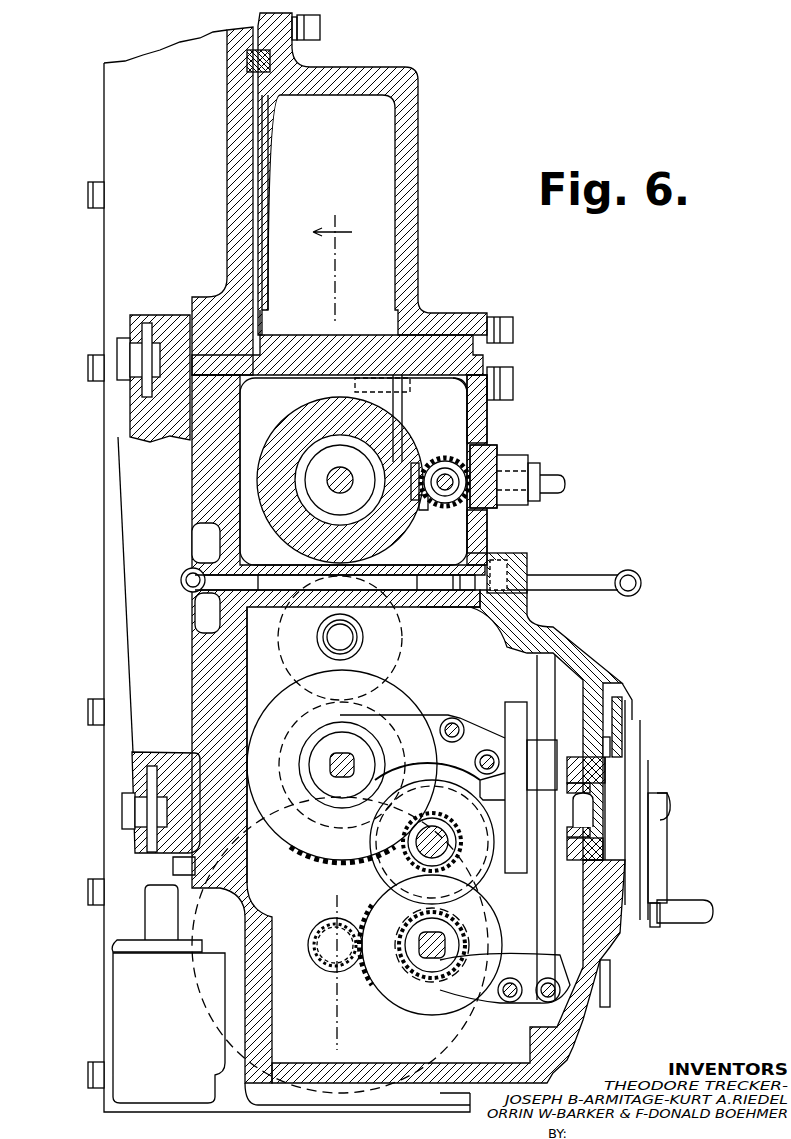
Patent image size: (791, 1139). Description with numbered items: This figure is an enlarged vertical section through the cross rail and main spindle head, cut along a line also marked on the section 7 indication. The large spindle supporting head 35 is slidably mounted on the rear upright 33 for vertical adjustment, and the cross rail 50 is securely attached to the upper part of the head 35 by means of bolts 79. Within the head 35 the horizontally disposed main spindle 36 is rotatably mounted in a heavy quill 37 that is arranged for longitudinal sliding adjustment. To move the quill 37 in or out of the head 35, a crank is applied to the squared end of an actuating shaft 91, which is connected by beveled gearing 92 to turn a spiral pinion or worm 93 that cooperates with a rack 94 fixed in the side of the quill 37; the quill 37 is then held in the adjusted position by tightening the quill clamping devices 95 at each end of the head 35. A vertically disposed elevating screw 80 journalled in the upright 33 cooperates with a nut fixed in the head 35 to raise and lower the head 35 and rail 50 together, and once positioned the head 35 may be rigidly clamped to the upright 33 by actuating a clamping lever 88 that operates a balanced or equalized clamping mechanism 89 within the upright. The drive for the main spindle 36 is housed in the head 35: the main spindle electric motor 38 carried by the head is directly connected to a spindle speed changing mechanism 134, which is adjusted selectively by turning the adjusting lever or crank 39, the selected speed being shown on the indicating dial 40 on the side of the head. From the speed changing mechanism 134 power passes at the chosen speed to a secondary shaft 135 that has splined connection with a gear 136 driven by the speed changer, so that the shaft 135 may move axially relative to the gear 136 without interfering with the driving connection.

The rear upright 33 is at (130, 150).
The cross rail 50 is at (418, 165).
The bolts 79 is at (320, 27).
The spindle supporting head 35 is at (623, 664).
The quill clamping devices 95 is at (460, 415).
The rack 94 is at (418, 440).
The spiral pinion or worm 93 is at (445, 455).
The beveled gearing 92 is at (437, 508).
The actuating shaft 91 is at (548, 478).
The main spindle 36 is at (272, 448).
The quill 37 is at (278, 432).
The clamping mechanism 89 is at (125, 540).
The clamping lever 88 is at (633, 572).
The secondary shaft 135 is at (355, 640).
The gear 136 is at (385, 672).
The spindle speed changing mechanism 134 is at (464, 708).
The main spindle electric motor 38 is at (210, 975).
The indicating dial 40 is at (627, 710).
The adjusting lever or crank 39 is at (690, 900).
The elevating screw 80 is at (155, 917).
The section line 7 is at (332, 630).